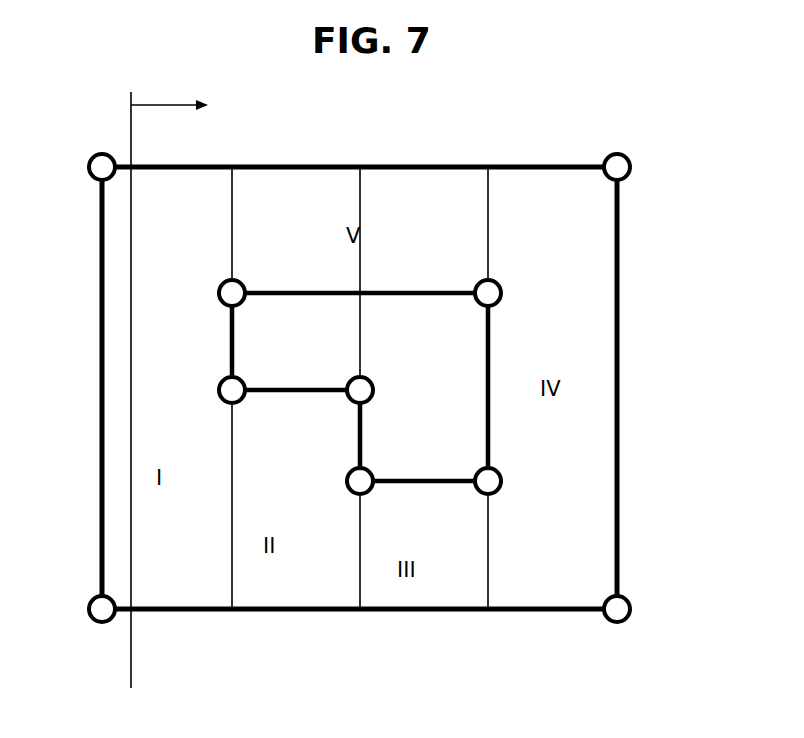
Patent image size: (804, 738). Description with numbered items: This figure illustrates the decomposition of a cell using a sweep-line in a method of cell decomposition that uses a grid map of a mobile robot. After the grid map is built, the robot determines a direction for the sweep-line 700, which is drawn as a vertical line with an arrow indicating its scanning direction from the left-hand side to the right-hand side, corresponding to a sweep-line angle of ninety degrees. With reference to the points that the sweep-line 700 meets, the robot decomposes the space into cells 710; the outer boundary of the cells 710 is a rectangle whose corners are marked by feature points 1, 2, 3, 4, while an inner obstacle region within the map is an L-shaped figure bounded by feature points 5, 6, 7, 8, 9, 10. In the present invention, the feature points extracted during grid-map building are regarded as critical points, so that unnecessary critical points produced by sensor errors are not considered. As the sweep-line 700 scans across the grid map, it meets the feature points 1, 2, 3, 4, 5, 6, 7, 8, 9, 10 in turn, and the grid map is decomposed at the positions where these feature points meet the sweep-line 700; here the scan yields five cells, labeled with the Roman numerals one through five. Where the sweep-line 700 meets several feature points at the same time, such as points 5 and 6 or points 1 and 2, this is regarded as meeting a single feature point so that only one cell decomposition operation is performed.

The vertex 1 of outer polygon 1 is at (92, 150).
The vertex 2 of outer polygon 2 is at (88, 593).
The vertex 3 of outer polygon 3 is at (638, 592).
The vertex 4 of outer polygon 4 is at (633, 150).
The vertex 5 of inner polygon 5 is at (220, 276).
The vertex 6 of inner polygon 6 is at (215, 392).
The vertex 7 of inner polygon 7 is at (343, 404).
The vertex 8 of inner polygon 8 is at (346, 496).
The vertex 9 of inner polygon 9 is at (474, 496).
The vertex 10 of inner polygon 10 is at (507, 303).
The sweep-line 700 is at (131, 652).
The cells 710 is at (360, 213).